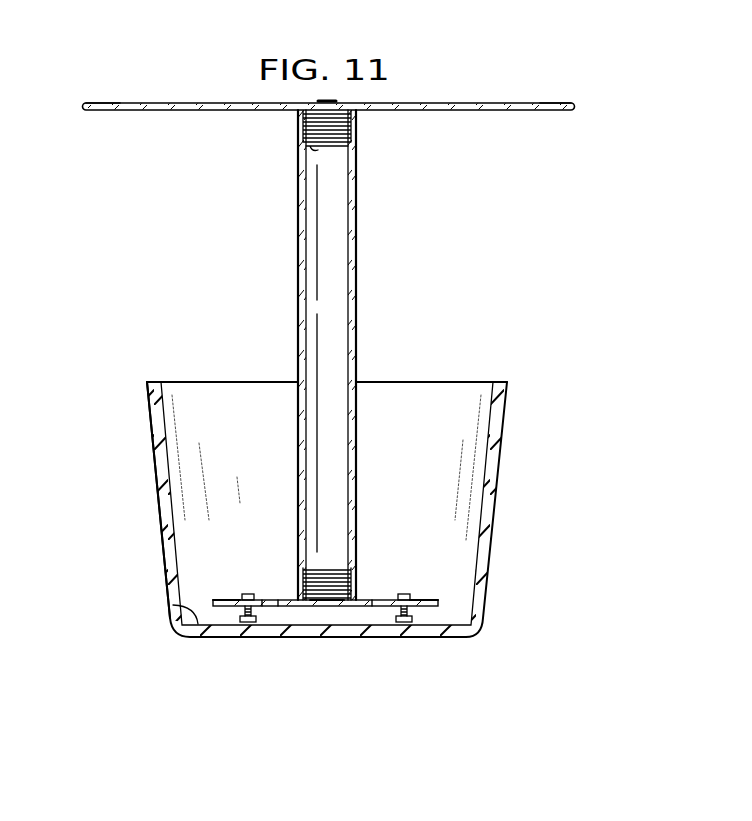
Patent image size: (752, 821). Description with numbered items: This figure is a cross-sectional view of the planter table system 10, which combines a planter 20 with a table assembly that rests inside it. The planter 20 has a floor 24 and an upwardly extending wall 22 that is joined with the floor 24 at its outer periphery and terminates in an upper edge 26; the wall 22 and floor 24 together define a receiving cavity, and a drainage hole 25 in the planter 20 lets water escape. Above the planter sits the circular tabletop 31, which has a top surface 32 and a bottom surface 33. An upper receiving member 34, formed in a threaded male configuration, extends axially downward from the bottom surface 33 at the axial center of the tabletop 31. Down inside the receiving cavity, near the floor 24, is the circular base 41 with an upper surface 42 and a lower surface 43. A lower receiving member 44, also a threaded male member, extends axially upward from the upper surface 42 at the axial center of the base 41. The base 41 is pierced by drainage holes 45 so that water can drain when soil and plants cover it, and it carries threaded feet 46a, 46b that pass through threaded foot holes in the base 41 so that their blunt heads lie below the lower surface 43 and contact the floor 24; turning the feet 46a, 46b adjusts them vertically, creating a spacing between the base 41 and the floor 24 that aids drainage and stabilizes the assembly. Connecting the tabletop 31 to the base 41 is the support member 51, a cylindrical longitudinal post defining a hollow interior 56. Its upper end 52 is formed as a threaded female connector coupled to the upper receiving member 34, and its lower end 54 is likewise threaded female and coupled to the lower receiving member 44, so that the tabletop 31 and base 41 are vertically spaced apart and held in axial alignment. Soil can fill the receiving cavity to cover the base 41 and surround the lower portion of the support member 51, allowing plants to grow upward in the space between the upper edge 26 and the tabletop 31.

The planter table system 10 is at (192, 60).
The planter 20 is at (496, 540).
The wall 22 is at (158, 506).
The floor 24 is at (176, 607).
The drainage hole 25 is at (318, 640).
The upper edge 26 is at (152, 380).
The tabletop 31 is at (132, 100).
The top surface 32 is at (480, 102).
The bottom surface 33 is at (458, 112).
The upper receiving member 34 is at (323, 148).
The base 41 is at (420, 516).
The upper surface 42 is at (238, 600).
The lower surface 43 is at (426, 606).
The lower receiving member 44 is at (330, 580).
The drainage holes 45 is at (367, 600).
The foot 46a is at (404, 627).
The foot 46b is at (247, 627).
The support member 51 is at (360, 280).
The upper end 52 is at (357, 122).
The lower end 54 is at (305, 580).
The hollow interior 56 is at (316, 310).